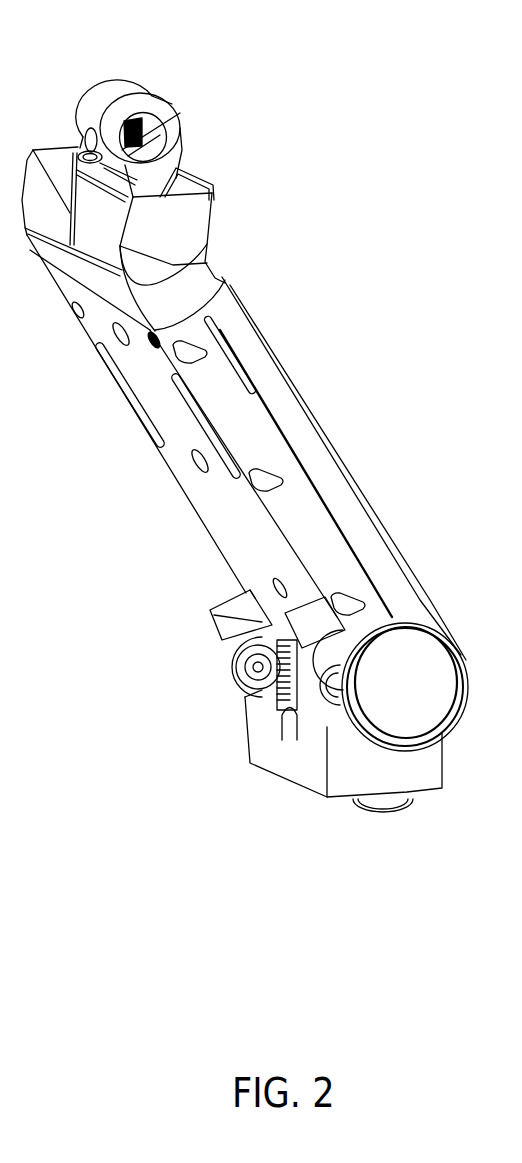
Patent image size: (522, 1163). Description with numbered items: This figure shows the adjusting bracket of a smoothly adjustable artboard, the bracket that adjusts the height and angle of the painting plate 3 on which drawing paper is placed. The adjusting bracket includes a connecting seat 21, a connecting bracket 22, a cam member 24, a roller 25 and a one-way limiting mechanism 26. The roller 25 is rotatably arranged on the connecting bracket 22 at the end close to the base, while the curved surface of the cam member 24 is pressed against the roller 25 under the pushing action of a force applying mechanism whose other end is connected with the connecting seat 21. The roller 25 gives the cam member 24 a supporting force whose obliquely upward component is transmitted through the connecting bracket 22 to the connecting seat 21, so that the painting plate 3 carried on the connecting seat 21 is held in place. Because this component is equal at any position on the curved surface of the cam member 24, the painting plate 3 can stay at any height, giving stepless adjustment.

The connecting seat 21 is at (168, 247).
The connecting bracket 22 is at (273, 453).
The cam member 24 is at (247, 613).
The roller 25 is at (245, 667).
The one-way limiting mechanism 26 is at (287, 725).
The painting plate 3 is at (357, 760).